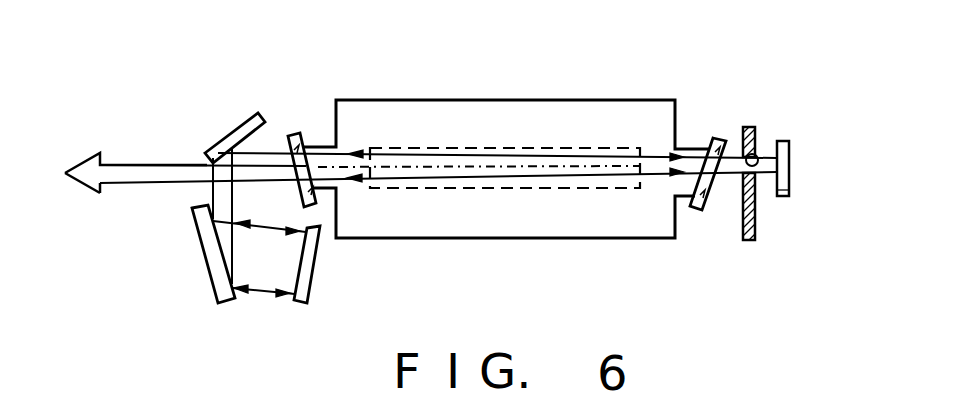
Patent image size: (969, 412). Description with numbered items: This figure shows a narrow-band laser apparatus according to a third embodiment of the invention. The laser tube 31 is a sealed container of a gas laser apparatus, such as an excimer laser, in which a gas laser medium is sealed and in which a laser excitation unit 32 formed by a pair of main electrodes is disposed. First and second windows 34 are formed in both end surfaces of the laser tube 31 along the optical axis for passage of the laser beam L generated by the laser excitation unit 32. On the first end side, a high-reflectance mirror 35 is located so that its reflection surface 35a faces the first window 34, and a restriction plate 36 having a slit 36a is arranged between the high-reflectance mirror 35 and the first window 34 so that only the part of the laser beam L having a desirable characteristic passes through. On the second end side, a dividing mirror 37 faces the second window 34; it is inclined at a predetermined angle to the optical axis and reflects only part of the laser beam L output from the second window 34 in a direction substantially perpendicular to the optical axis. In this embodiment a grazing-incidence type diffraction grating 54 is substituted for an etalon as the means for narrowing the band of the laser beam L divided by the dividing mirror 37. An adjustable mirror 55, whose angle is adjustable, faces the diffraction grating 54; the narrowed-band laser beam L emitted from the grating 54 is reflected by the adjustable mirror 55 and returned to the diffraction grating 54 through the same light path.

The laser tube 31 is at (398, 99).
The laser excitation unit 32 is at (605, 148).
The windows 34 is at (298, 134).
The high-reflectance mirror 35 is at (790, 161).
The reflection surface 35a is at (777, 187).
The restriction plate 36 is at (756, 226).
The slit 36a is at (762, 152).
The dividing mirror 37 is at (240, 126).
The grazing-incidence type diffraction grating 54 is at (212, 284).
The adjustable mirror 55 is at (319, 277).
The laser beam L is at (147, 166).